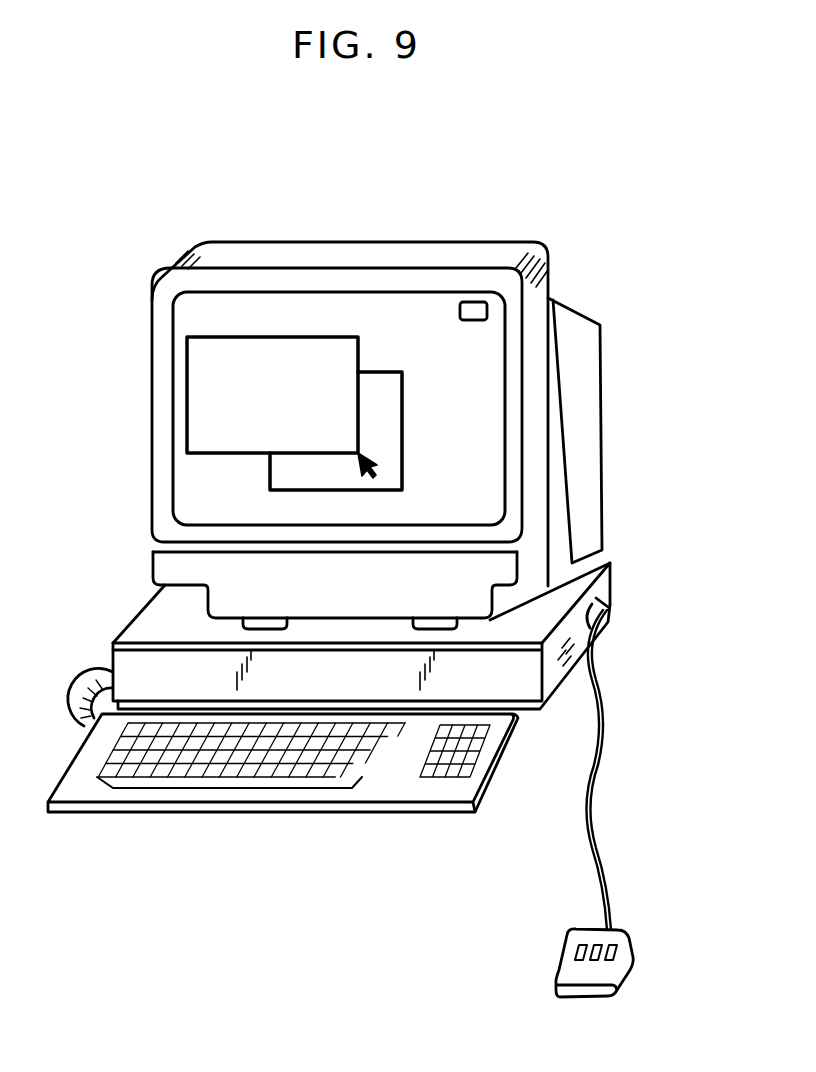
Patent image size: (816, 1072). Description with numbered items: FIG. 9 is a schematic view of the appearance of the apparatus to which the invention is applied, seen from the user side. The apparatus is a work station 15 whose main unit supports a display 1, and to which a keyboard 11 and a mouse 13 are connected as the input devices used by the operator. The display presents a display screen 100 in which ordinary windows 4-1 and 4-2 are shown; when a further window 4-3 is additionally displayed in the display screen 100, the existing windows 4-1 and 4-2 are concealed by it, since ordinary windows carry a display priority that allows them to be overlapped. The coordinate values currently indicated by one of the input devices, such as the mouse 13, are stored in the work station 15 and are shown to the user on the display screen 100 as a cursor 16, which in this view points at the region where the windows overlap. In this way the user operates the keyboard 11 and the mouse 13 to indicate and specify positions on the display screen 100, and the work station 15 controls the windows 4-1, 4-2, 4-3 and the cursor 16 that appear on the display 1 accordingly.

The display unit 1 is at (545, 245).
The display screen 100 is at (172, 325).
The window 4-1 is at (466, 302).
The window 4-2 is at (385, 372).
The window 4-3 is at (303, 337).
The cursor 16 is at (372, 462).
The work station 15 is at (610, 565).
The keyboard 11 is at (218, 803).
The mouse 13 is at (626, 932).